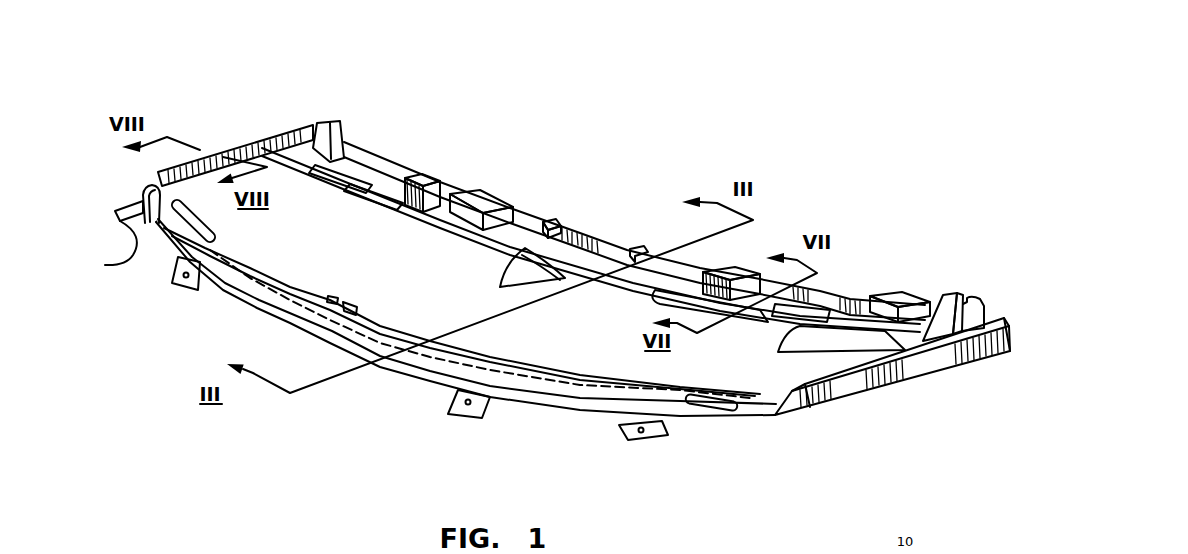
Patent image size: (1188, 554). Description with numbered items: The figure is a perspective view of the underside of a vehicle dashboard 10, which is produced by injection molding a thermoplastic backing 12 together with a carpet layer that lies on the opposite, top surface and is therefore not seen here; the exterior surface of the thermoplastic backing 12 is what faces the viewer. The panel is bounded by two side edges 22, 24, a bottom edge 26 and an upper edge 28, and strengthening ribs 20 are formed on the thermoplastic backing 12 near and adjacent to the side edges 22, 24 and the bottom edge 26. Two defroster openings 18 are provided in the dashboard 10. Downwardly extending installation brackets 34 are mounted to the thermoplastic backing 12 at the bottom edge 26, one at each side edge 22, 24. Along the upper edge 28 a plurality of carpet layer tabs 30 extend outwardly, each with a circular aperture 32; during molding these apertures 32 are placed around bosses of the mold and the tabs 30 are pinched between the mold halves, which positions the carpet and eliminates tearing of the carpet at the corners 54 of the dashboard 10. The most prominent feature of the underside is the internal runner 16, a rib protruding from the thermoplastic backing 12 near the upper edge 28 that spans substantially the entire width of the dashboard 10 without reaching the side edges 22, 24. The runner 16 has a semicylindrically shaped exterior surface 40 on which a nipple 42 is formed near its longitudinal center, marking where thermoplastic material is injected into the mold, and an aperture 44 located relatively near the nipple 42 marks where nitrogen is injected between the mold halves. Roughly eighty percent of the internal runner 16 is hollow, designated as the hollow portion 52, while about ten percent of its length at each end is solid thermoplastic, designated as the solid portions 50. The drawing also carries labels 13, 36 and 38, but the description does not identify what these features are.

The vehicle dashboard 10 is at (371, 399).
The thermoplastic backing 12 is at (305, 261).
The channel 13 is at (331, 209).
The internal runner 16 is at (496, 344).
The defroster openings 18 is at (380, 197).
The strengthening ribs 20 is at (500, 287).
The side edge 22 is at (950, 357).
The side edge 24 is at (291, 124).
The bottom edge 26 is at (582, 227).
The upper edge 28 is at (312, 351).
The carpet layer tabs 30 is at (173, 280).
The circular aperture 32 is at (180, 281).
The installation brackets 34 is at (337, 125).
The locating block 36 is at (423, 173).
The left wall segment 38 is at (247, 150).
The exterior surface 40 is at (588, 380).
The nipple 42 is at (350, 304).
The aperture 44 is at (333, 297).
The solid portions 50 is at (187, 213).
The hollow portion 52 is at (265, 268).
The corners 54 is at (152, 185).